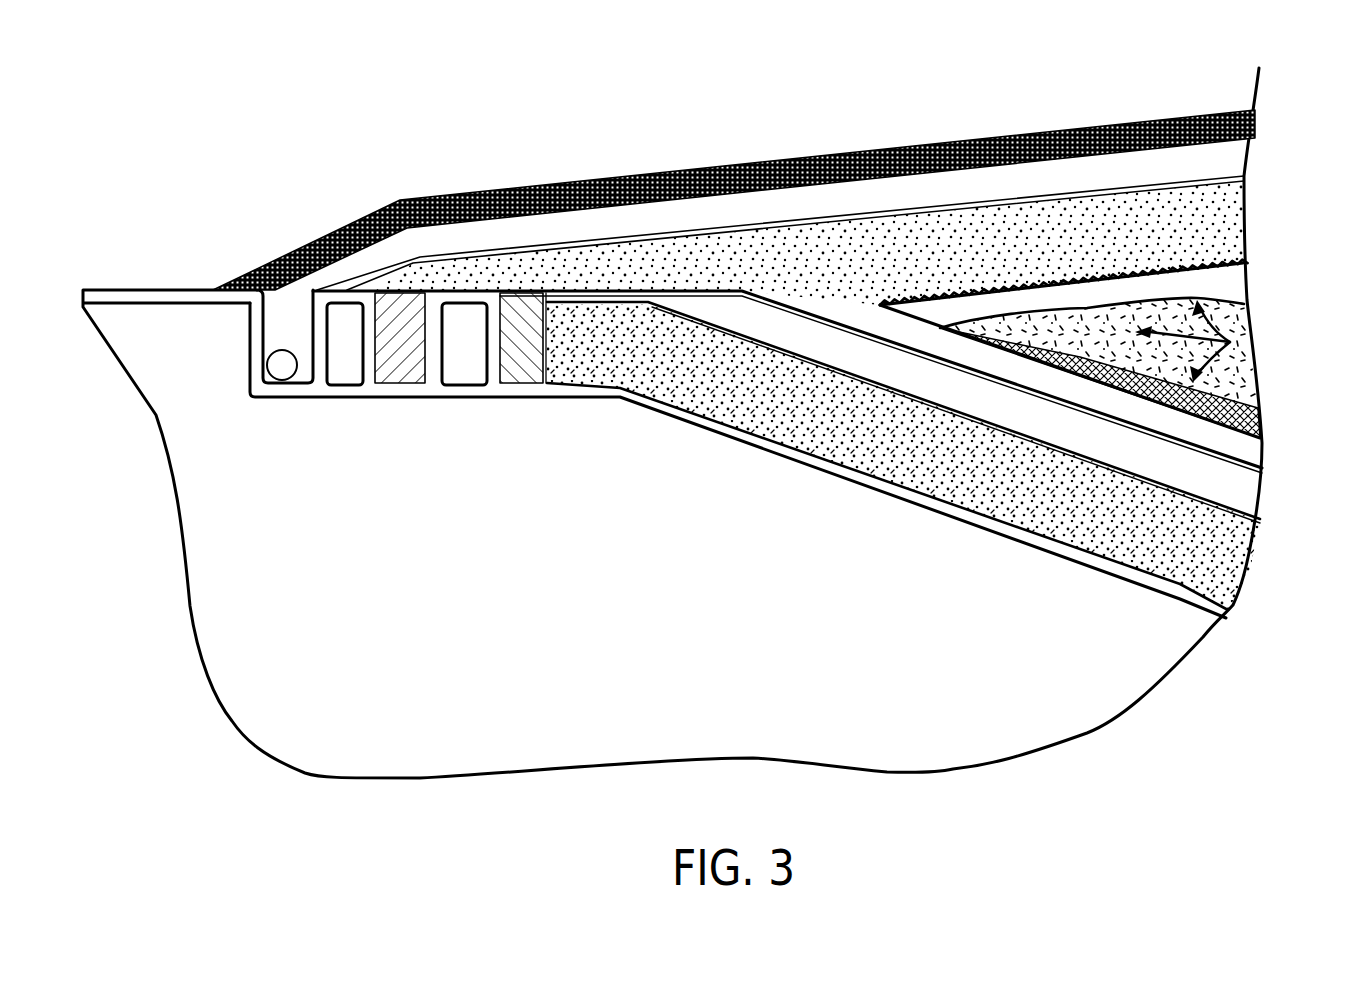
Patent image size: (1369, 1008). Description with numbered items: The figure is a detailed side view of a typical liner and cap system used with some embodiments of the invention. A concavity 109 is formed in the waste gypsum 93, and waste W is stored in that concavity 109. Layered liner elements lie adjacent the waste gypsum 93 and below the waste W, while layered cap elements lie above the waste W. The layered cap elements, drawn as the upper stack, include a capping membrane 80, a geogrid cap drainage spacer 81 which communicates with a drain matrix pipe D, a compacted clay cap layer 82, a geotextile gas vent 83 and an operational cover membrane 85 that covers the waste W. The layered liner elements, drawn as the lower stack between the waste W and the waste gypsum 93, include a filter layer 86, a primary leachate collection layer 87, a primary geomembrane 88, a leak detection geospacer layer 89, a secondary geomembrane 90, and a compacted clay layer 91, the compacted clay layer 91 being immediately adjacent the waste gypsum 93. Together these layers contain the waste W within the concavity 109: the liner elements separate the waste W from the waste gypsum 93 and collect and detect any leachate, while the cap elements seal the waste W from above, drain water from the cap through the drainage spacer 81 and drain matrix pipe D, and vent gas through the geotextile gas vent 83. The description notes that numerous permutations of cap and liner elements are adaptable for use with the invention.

The capping membrane 80 is at (735, 167).
The geogrid cap drainage spacer 81 is at (1005, 180).
The compacted clay cap layer 82 is at (1238, 209).
The geotextile gas vent 83 is at (1243, 262).
The operational cover membrane 85 is at (1233, 285).
The filter layer 86 is at (1253, 428).
The primary leachate collection layer 87 is at (1253, 454).
The primary geomembrane 88 is at (1252, 473).
The leak detection geospacer layer 89 is at (1255, 497).
The secondary geomembrane 90 is at (1257, 522).
The compacted clay layer 91 is at (1233, 578).
The waste gypsum 93 is at (1097, 705).
The concavity 109 is at (1222, 341).
The waste W is at (1243, 390).
The drain matrix pipe D is at (288, 352).